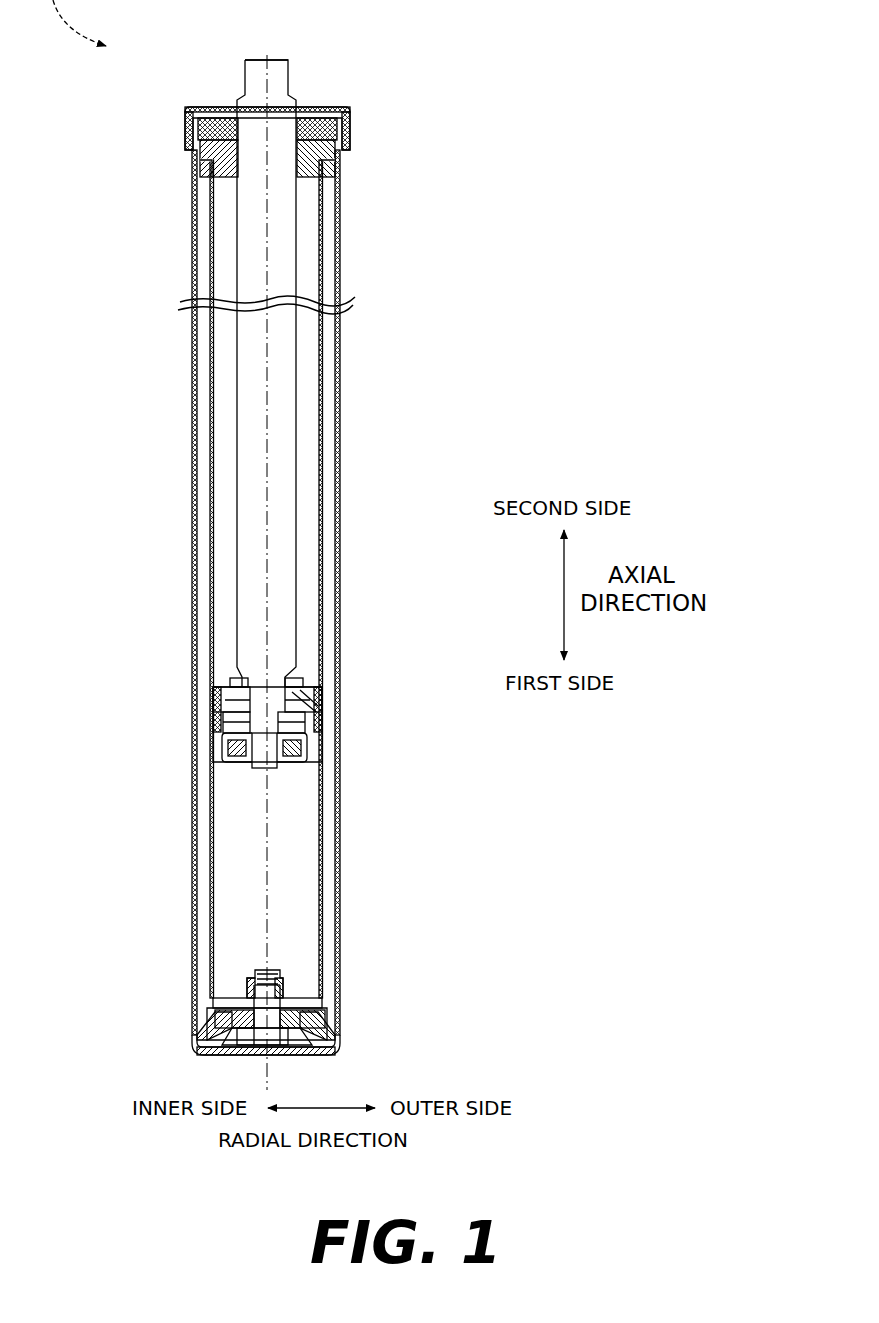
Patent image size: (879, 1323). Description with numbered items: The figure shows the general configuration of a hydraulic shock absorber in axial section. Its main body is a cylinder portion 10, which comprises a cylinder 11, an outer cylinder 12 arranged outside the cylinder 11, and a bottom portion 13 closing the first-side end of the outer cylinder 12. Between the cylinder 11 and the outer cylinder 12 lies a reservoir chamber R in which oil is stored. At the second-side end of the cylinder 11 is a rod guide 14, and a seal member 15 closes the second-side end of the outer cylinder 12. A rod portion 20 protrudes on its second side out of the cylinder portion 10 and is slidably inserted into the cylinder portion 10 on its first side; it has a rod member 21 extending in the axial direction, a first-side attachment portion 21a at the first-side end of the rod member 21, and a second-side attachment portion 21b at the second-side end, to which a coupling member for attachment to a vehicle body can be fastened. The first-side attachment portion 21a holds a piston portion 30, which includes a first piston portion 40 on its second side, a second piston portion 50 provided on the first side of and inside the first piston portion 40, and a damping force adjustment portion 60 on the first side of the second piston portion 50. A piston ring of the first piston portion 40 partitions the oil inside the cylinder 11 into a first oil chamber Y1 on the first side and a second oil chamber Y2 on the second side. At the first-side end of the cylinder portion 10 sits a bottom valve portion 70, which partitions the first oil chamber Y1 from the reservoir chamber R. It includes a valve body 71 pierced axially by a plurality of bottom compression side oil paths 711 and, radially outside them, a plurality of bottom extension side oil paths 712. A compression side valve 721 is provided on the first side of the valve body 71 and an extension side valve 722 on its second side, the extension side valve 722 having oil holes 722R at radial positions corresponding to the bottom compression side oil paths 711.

The cylinder portion 10 is at (368, 126).
The cylinder 11 is at (351, 352).
The outer cylinder 12 is at (343, 573).
The bottom portion 13 is at (245, 1055).
The rod guide 14 is at (338, 165).
The seal member 15 is at (190, 122).
The rod portion 20 is at (303, 84).
The rod member 21 is at (335, 493).
The first-side attachment portion 21a is at (280, 768).
The second-side attachment portion 21b is at (245, 78).
The piston portion 30 is at (107, 647).
The first piston portion 40 is at (211, 689).
The second piston portion 50 is at (211, 725).
The damping force adjustment portion 60 is at (211, 755).
The bottom valve portion 70 is at (306, 969).
The valve body 71 is at (337, 1018).
The bottom compression side oil paths 711 is at (215, 1020).
The bottom extension side oil paths 712 is at (320, 1030).
The compression side valve 721 is at (290, 1045).
The extension side valve 722 is at (310, 1005).
The oil holes 722R is at (245, 995).
The reservoir chamber R is at (338, 457).
The first oil chamber Y1 is at (292, 889).
The second oil chamber Y2 is at (335, 528).